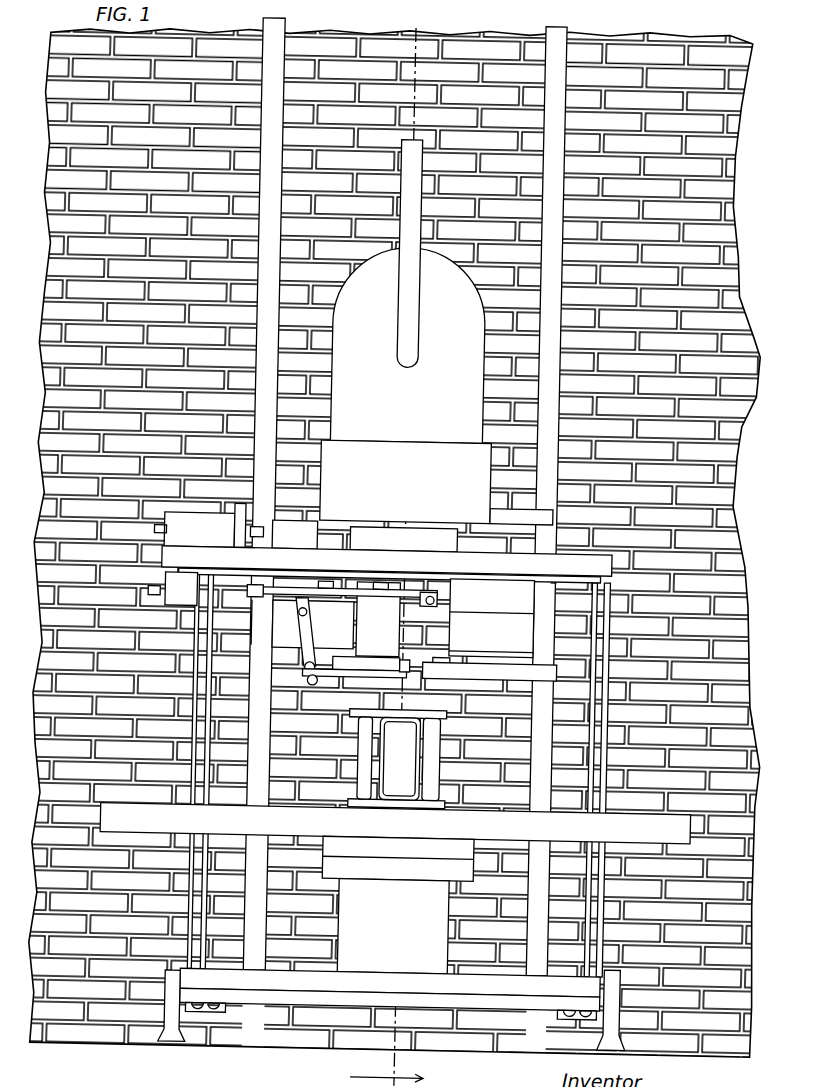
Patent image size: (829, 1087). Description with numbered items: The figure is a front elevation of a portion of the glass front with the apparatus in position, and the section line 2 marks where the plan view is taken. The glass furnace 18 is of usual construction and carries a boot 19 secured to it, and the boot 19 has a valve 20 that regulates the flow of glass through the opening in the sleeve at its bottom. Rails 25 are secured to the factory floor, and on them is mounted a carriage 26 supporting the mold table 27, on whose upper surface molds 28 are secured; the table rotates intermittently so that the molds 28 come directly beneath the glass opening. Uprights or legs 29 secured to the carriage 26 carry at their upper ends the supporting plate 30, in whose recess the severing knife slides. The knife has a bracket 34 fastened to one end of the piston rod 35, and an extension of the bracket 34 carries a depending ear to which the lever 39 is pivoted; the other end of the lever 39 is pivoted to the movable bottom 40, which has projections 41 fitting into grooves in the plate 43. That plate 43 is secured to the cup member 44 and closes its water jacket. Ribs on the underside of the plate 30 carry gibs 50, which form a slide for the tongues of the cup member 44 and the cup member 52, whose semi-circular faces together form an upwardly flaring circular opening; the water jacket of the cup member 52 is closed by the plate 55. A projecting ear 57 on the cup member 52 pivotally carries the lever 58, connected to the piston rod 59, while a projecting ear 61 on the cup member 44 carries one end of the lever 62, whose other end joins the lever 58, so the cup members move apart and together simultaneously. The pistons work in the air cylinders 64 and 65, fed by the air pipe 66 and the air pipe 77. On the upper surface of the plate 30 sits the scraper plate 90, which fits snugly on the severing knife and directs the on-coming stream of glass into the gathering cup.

The section line 2 is at (398, 544).
The glass furnace 18 is at (745, 428).
The boot 19 is at (408, 344).
The valve 20 is at (425, 309).
The rails 25 is at (184, 1046).
The carriage 26 is at (378, 980).
The mold table 27 is at (395, 823).
The molds 28 is at (452, 757).
The uprights or legs 29 is at (215, 735).
The supporting plate 30 is at (611, 558).
The bracket 34 is at (300, 523).
The piston rod 35 is at (272, 535).
The lever 39 is at (326, 688).
The movable bottom 40 is at (370, 678).
The projections 41 is at (419, 672).
The plate 43 is at (385, 659).
The cup member 44 is at (370, 630).
The gibs 50 is at (564, 579).
The cup member 52 is at (461, 633).
The plate 55 is at (453, 665).
The projecting ear 57 is at (446, 600).
The lever 58 is at (392, 583).
The piston rod 59 is at (274, 602).
The projecting ear 61 is at (377, 598).
The lever 62 is at (338, 583).
The air cylinder 64 is at (216, 522).
The air cylinder 65 is at (184, 602).
The air pipe 66 is at (165, 534).
The air pipe 77 is at (164, 596).
The scraper plate 90 is at (403, 539).